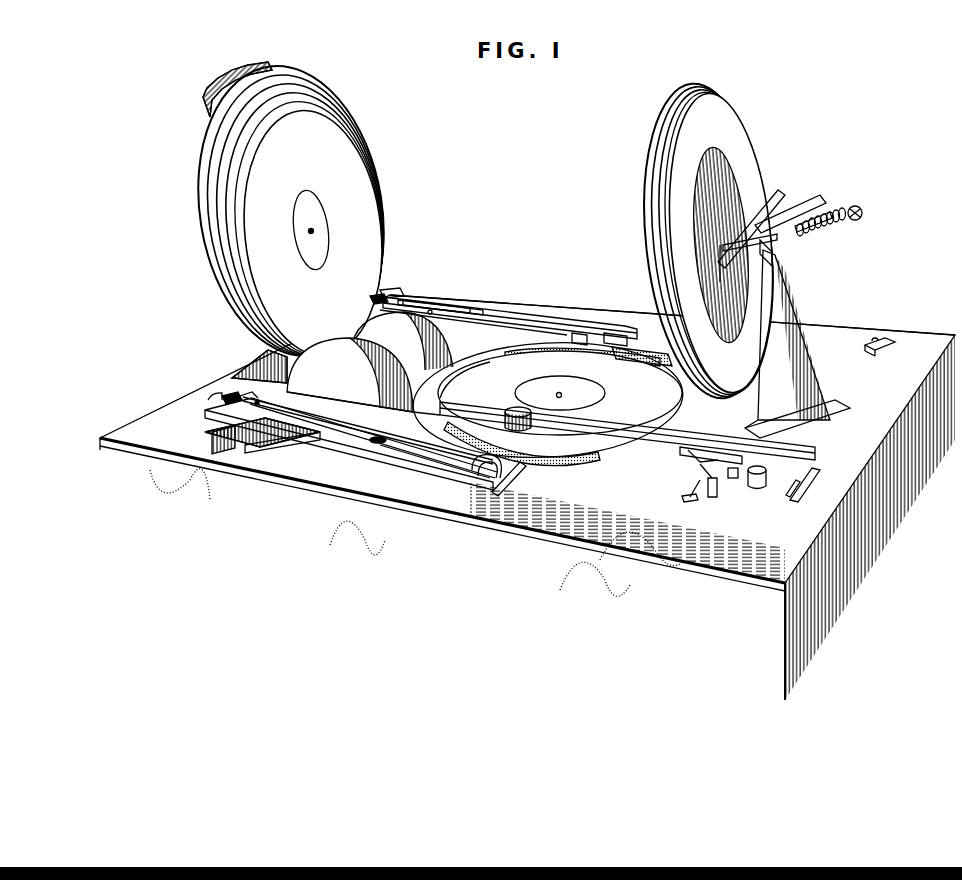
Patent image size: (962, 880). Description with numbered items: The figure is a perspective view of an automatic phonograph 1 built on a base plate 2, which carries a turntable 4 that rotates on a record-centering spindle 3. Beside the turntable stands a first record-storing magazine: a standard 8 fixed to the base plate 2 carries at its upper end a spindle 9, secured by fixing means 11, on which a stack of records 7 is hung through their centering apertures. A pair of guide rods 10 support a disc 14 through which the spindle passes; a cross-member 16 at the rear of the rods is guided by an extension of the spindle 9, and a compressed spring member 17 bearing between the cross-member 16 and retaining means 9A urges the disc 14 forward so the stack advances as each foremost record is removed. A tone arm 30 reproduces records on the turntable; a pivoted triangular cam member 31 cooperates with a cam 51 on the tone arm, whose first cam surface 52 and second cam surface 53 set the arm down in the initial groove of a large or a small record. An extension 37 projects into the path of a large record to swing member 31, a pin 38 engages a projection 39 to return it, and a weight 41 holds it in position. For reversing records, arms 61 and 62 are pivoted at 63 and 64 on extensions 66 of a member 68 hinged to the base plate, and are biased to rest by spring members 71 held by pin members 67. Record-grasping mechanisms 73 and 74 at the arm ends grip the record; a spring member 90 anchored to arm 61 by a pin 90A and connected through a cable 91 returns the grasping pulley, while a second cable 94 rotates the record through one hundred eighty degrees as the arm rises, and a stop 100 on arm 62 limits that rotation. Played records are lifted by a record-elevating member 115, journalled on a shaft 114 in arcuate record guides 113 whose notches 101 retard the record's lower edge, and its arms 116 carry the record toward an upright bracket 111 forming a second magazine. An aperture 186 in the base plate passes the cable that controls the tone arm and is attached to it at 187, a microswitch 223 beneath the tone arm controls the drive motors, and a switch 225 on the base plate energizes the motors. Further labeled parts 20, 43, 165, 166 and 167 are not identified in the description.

The grinding machine 1 is at (214, 364).
The base plate 2 is at (432, 500).
The record-centering spindle 3 is at (560, 392).
The turntable 4 is at (598, 448).
The stack of records 7 is at (742, 140).
The standard 8 is at (791, 322).
The spindle 9 is at (780, 242).
The retaining means 9A is at (862, 219).
The guide rods 10 is at (790, 210).
The fixing means 11 is at (760, 205).
The disc 14 is at (736, 178).
The cross-member 16 is at (816, 212).
The spring member 17 is at (832, 226).
The wheel support plate 20 is at (680, 368).
The tone arm 30 is at (626, 428).
The triangular cam member 31 is at (706, 470).
The extension 37 is at (690, 450).
The pin 38 is at (690, 502).
The projection 39 is at (682, 498).
The weight 41 is at (712, 498).
The turntable hub 43 is at (506, 412).
The cam 51 is at (716, 458).
The first cam surface 52 is at (690, 462).
The second cam surface 53 is at (733, 479).
The arm 61 is at (366, 452).
The arm 62 is at (549, 317).
The pivot 63 is at (433, 310).
The pivot 64 is at (303, 432).
The extensions 66 is at (480, 308).
The pin members 67 is at (261, 404).
The member 68 is at (236, 442).
The spring members 71 is at (247, 396).
The record-grasping mechanism 73 is at (505, 473).
The record-grasping mechanism 74 is at (614, 335).
The spring member 90 is at (410, 458).
The pin 90A is at (370, 440).
The cable 91 is at (446, 470).
The second cable 94 is at (504, 488).
The stop 100 is at (581, 333).
The notches 101 is at (388, 318).
The upright bracket 111 is at (206, 94).
The record guides 113 is at (322, 366).
The shaft 114 is at (269, 409).
The record-elevating member 115 is at (456, 374).
The arms 116 is at (510, 358).
The bracket 165 is at (388, 296).
The bracket base 166 is at (403, 302).
The bracket pad 167 is at (379, 294).
The aperture 186 is at (812, 484).
The cable attachment point 187 is at (800, 494).
The microswitch 223 is at (755, 490).
The switch 225 is at (884, 340).